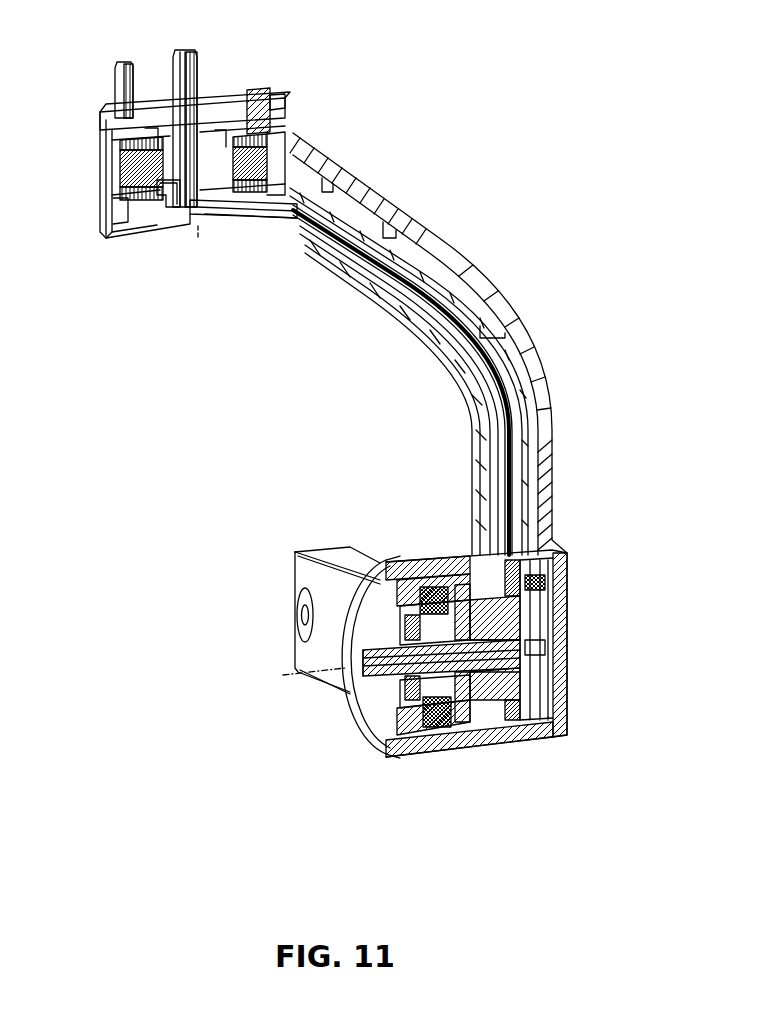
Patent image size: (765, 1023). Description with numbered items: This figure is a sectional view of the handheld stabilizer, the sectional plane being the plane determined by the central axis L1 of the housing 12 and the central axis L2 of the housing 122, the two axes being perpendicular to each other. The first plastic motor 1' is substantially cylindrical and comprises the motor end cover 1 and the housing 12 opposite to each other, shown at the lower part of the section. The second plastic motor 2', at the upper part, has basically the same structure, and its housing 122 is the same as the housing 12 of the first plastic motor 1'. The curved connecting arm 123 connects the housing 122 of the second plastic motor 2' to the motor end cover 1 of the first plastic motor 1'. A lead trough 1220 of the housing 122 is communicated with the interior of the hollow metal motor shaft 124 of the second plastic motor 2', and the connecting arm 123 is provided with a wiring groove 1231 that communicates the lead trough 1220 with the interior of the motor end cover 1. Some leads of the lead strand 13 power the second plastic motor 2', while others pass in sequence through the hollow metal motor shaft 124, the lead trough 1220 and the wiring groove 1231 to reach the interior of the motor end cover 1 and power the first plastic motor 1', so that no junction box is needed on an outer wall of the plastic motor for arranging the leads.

The motor end cover 1 is at (488, 653).
The first plastic motor 1' is at (356, 574).
The second plastic motor 2' is at (255, 86).
The housing 12 is at (370, 708).
The lead strand 13 is at (193, 52).
The housing 122 is at (98, 187).
The connecting arm 123 is at (412, 228).
The hollow metal motor shaft 124 is at (178, 230).
The lead trough 1220 is at (205, 216).
The wiring groove 1231 is at (400, 267).
The central axis L1 is at (294, 683).
The central axis L2 is at (199, 249).